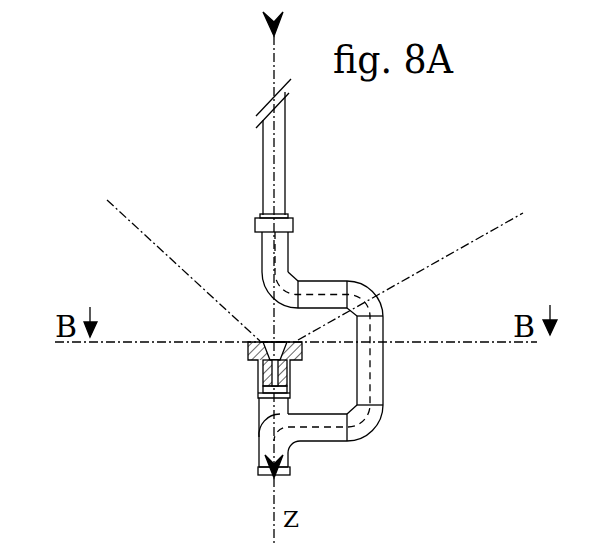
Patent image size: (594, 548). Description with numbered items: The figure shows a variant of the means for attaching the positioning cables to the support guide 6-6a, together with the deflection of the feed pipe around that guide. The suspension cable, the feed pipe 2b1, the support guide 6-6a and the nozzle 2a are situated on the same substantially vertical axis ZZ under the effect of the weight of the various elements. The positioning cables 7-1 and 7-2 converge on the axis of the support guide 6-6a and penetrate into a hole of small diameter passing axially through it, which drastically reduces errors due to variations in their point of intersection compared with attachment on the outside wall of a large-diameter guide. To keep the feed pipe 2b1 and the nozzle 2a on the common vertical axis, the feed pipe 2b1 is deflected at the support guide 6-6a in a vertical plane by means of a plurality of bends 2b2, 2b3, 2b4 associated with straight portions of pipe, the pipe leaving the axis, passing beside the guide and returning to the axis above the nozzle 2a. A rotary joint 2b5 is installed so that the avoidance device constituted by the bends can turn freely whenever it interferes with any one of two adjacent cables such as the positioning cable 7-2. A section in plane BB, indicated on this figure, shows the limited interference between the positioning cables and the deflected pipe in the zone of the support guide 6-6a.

The nozzle 2a is at (258, 478).
The feed pipe 2b1 is at (285, 163).
The bend 2b2 is at (292, 278).
The bend 2b3 is at (380, 293).
The bend 2b4 is at (372, 432).
The rotary joint 2b5 is at (255, 226).
The support guide 6-6a is at (248, 352).
The positioning cable 7-1 is at (128, 219).
The positioning cable 7-2 is at (523, 213).